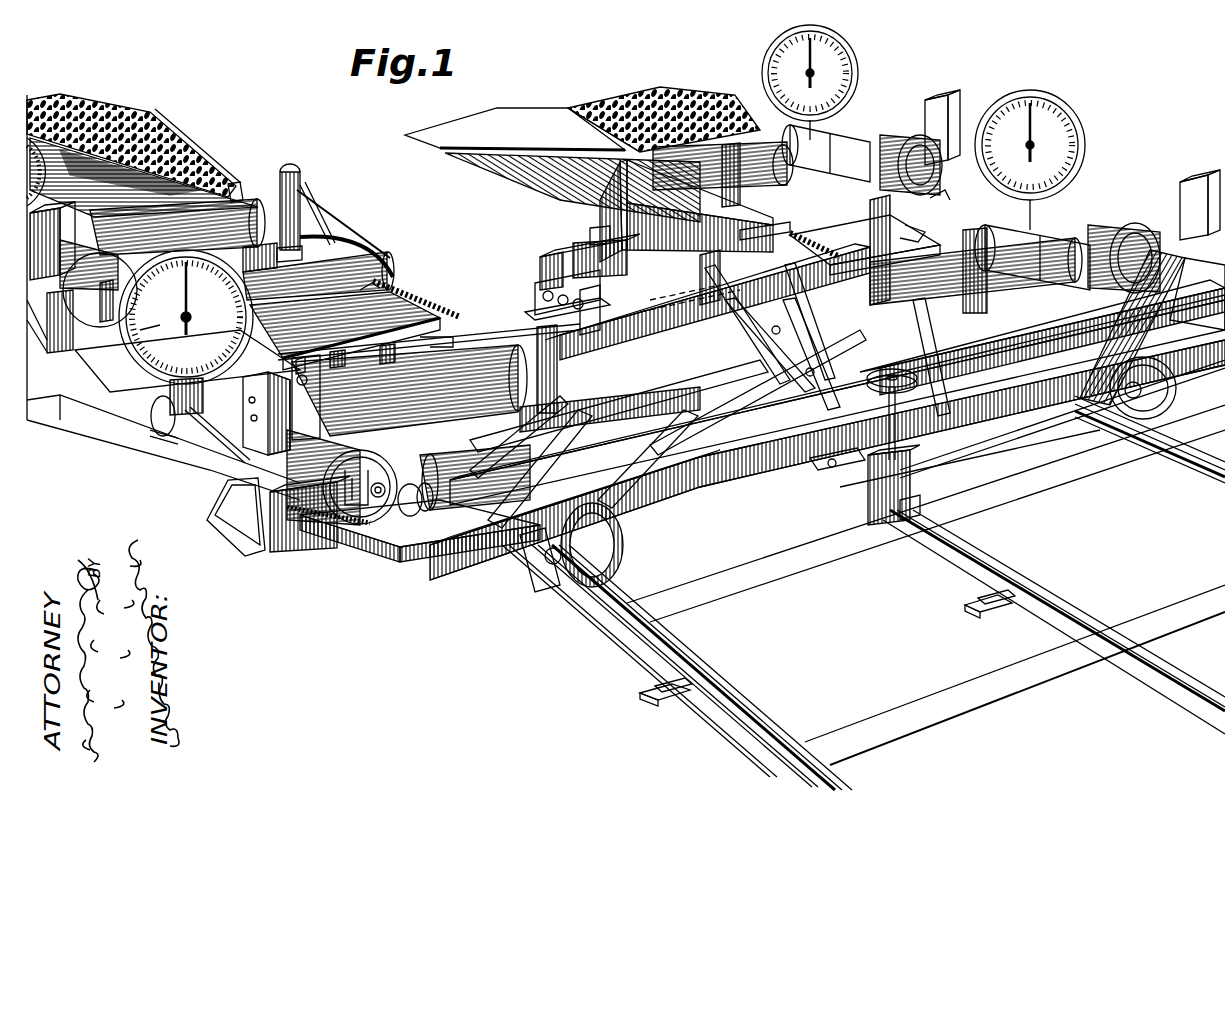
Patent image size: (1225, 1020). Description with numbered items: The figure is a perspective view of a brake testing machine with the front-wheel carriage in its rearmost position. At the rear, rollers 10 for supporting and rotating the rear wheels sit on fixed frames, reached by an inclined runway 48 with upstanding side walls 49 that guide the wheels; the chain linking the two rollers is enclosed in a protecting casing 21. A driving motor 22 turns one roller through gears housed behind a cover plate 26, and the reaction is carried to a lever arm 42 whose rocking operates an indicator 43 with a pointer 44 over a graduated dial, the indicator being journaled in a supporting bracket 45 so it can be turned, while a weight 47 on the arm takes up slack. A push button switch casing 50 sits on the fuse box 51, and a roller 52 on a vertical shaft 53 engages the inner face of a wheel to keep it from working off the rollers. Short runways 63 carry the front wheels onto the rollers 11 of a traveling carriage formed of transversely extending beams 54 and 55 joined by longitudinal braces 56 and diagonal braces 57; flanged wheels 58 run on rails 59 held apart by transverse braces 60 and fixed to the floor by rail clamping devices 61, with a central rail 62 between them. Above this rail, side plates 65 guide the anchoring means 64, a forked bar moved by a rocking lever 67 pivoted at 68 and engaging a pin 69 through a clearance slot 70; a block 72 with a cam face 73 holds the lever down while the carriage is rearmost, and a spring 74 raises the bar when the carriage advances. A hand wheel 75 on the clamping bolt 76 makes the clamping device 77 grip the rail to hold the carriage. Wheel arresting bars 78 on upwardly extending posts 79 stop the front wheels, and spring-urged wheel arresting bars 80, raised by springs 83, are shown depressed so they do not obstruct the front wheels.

The rollers 10 is at (228, 196).
The rollers 11 is at (448, 362).
The protecting casing 21 is at (335, 250).
The driving motor 22 is at (97, 322).
The cover plate 26 is at (820, 153).
The lever arm 42 is at (200, 440).
The indicator 43 is at (150, 365).
The pointer 44 is at (190, 300).
The supporting bracket 45 is at (163, 402).
The weight 47 is at (168, 433).
The inclined runway 48 is at (530, 152).
The upstanding side walls 49 is at (140, 108).
The casing 50 is at (1185, 196).
The fuse box 51 is at (60, 357).
The roller 52 is at (302, 190).
The vertical shaft 53 is at (300, 245).
The transversely extending beam 54 is at (988, 432).
The transversely extending beam 55 is at (655, 400).
The longitudinally extending braces 56 is at (437, 553).
The diagonally extending braces 57 is at (718, 440).
The flanged wheels 58 is at (360, 356).
The carriage supporting rails 59 is at (1183, 462).
The transversely extending braces 60 is at (842, 570).
The rail clamping devices 61 is at (990, 612).
The central rail 62 is at (1008, 563).
The runway 63 is at (410, 315).
The anchoring means 64 is at (795, 242).
The side plates 65 is at (700, 322).
The rocking lever 67 is at (768, 366).
The pivot 68 is at (607, 313).
The pin 69 is at (770, 345).
The clearance slot 70 is at (803, 321).
The block 72 is at (545, 258).
The cam face 73 is at (545, 281).
The spring 74 is at (686, 211).
The hand wheel 75 is at (898, 374).
The clamping bolt 76 is at (908, 445).
The clamping device 77 is at (858, 505).
The wheel arresting bars 78 is at (603, 415).
The upwardly extending posts 79 is at (512, 548).
The wheel arresting bars 80 is at (357, 293).
The springs 83 is at (410, 293).